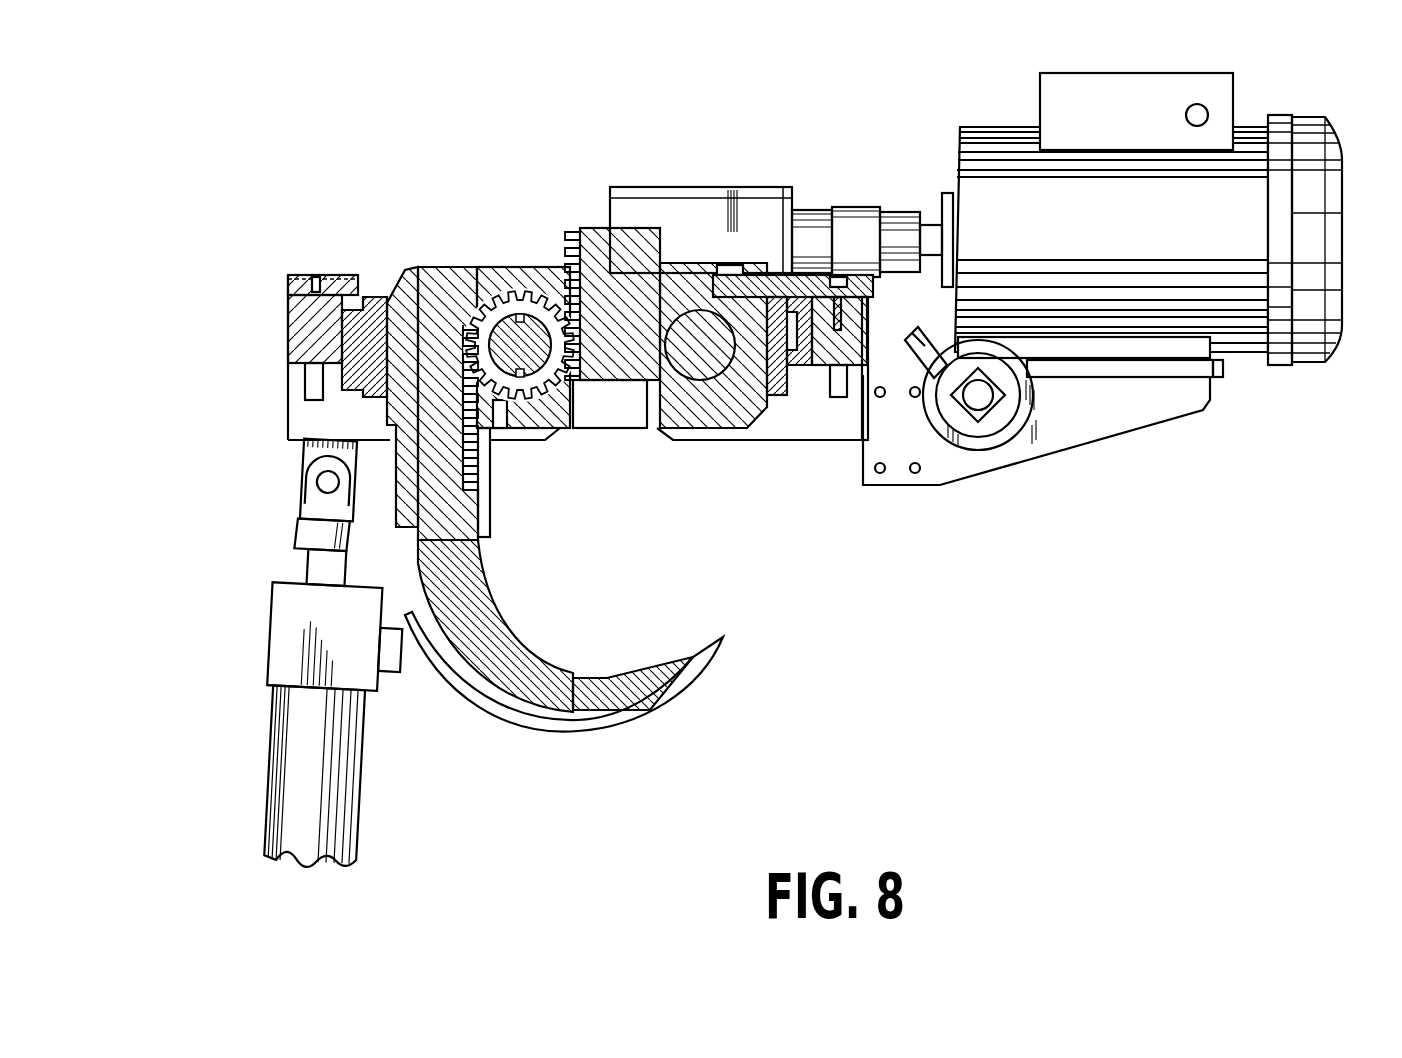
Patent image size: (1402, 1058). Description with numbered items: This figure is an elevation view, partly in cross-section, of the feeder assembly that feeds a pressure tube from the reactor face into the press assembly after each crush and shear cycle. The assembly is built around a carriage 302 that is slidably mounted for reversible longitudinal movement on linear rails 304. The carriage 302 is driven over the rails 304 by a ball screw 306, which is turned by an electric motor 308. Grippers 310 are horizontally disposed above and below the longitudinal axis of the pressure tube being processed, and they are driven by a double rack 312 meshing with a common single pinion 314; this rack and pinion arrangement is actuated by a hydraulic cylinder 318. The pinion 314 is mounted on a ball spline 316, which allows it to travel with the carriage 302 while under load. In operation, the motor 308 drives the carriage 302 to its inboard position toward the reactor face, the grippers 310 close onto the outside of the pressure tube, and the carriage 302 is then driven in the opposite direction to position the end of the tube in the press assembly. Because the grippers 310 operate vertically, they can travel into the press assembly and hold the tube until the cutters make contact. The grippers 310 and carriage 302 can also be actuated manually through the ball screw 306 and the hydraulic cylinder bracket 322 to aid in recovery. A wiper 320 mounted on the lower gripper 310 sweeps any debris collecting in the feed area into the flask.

The carriage 302 is at (717, 410).
The linear rails 304 is at (340, 342).
The ball screw 306 is at (713, 357).
The electric motor 308 is at (1000, 197).
The grippers 310 is at (610, 383).
The double rack 312 is at (567, 267).
The pinion 314 is at (514, 350).
The ball spline 316 is at (462, 320).
The hydraulic cylinder 318 is at (293, 707).
The wiper 320 is at (680, 703).
The hydraulic cylinder bracket 322 is at (308, 457).